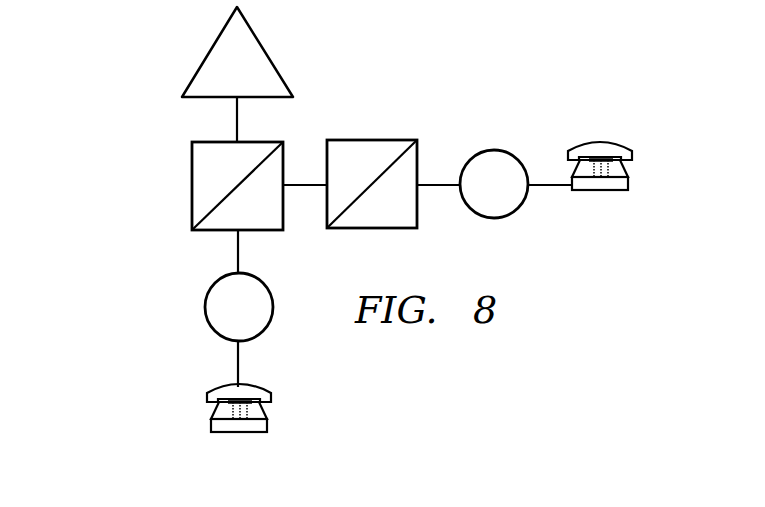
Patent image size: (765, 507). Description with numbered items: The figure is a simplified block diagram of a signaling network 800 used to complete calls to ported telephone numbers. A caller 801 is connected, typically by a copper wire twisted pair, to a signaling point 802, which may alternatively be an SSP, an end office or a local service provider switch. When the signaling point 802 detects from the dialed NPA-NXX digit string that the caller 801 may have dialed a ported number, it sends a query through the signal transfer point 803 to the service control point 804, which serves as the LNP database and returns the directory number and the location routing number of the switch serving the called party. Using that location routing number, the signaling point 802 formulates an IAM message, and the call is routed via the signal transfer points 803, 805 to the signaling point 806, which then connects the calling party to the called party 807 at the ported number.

The signaling network 800 is at (116, 111).
The caller 801 is at (233, 432).
The signaling point (SP) 802 is at (204, 307).
The signal transfer point (STP) 803 is at (192, 189).
The service control point (SCP) 804 is at (205, 50).
The signal transfer point (STP) 805 is at (370, 139).
The signaling point (SP) 806 is at (493, 149).
The called party 807 is at (605, 145).